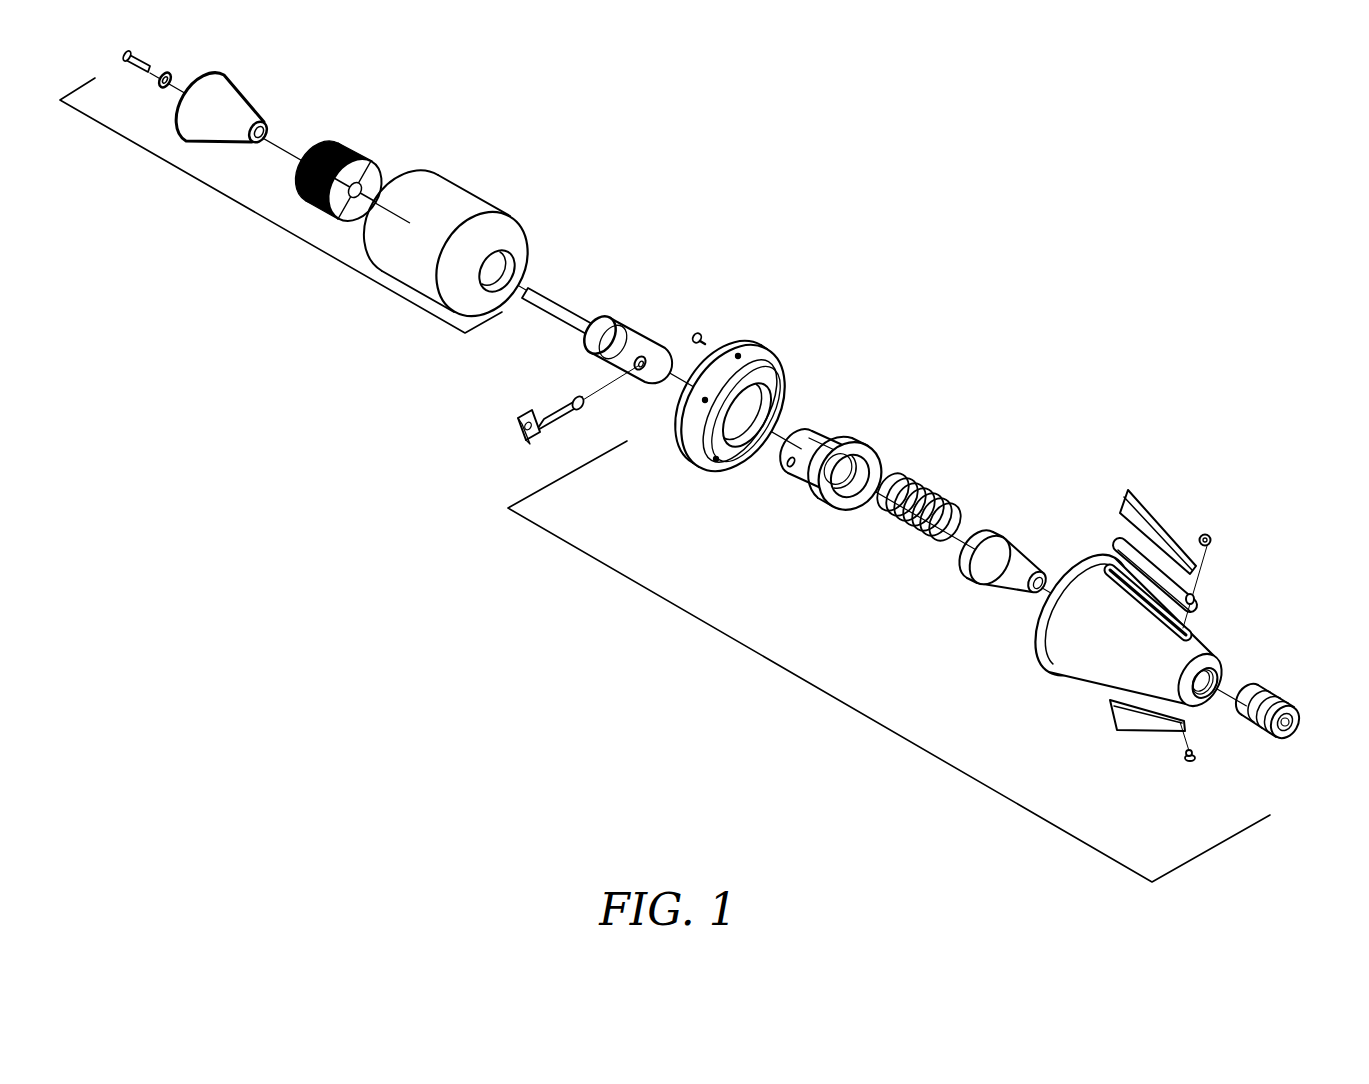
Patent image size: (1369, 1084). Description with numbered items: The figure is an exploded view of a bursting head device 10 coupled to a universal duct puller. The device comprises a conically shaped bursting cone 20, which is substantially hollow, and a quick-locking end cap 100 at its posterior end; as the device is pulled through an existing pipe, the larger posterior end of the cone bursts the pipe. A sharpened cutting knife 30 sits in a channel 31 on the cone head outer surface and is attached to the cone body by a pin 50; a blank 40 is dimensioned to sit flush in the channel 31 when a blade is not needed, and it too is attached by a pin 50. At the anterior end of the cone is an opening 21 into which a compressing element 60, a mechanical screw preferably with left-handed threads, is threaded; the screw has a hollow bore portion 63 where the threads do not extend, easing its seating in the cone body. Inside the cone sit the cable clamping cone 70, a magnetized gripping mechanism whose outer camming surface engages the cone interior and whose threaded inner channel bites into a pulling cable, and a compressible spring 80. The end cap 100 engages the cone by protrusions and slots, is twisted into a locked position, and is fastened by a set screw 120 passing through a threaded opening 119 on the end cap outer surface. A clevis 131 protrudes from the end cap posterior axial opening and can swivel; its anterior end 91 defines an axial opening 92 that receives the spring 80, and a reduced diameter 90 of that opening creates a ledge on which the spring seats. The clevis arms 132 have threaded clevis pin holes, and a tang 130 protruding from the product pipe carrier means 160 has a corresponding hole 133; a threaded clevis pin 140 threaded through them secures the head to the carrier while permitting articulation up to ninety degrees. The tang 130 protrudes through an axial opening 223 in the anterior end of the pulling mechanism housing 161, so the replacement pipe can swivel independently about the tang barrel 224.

The bursting head device 10 is at (830, 697).
The bursting cone 20 is at (1139, 635).
The anterior opening 21 is at (1214, 705).
The cutting knife 30 is at (1162, 514).
The channel 31 is at (1108, 568).
The blank 40 is at (1197, 597).
The pin 50 is at (1212, 540).
The compressing element 60 is at (1291, 716).
The hollow bore portion 63 is at (1262, 700).
The cable clamping cone 70 is at (970, 586).
The compressible spring 80 is at (926, 489).
The reduced diameter 90 is at (825, 477).
The clevis anterior end 91 is at (858, 508).
The axial opening 92 is at (867, 449).
The end cap 100 is at (763, 383).
The threaded opening 119 is at (754, 346).
The set screw 120 is at (704, 331).
The tang 130 is at (645, 331).
The clevis 131 is at (814, 428).
The clevis arms 132 is at (787, 463).
The tang clevis pin hole 133 is at (643, 372).
The clevis pin 140 is at (519, 431).
The product pipe carrier means 160 is at (263, 217).
The replacement pipe pulling mechanism housing 161 is at (495, 237).
The axial opening 223 is at (519, 257).
The tang barrel 224 is at (598, 332).